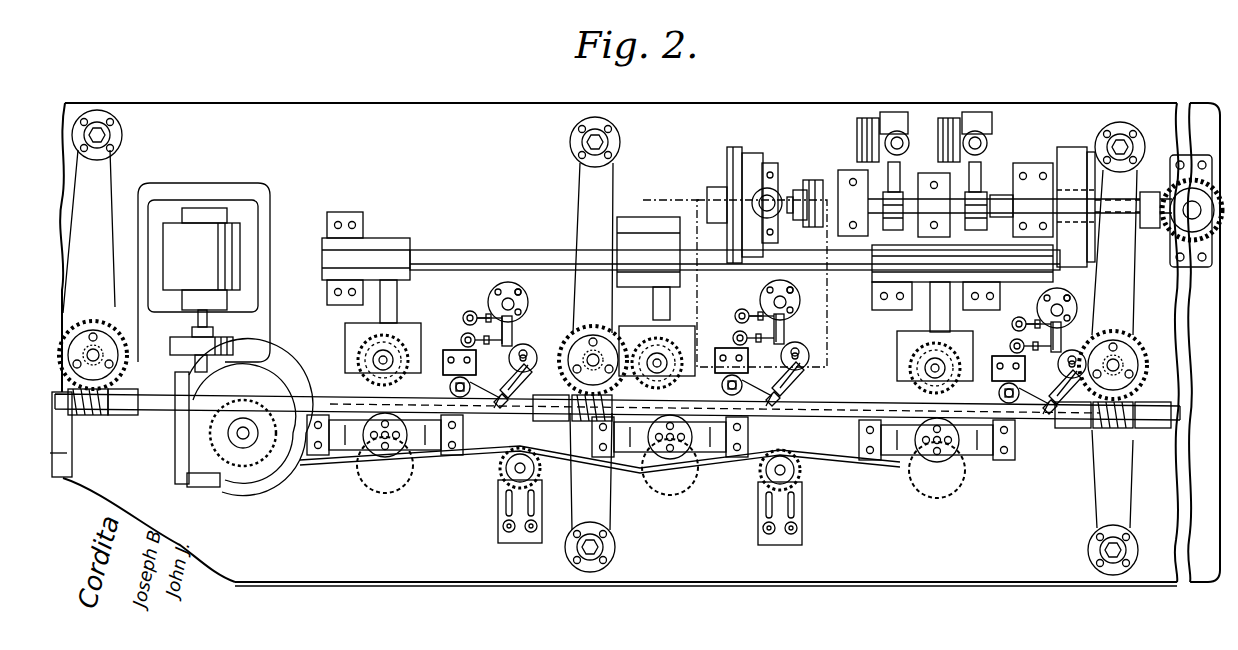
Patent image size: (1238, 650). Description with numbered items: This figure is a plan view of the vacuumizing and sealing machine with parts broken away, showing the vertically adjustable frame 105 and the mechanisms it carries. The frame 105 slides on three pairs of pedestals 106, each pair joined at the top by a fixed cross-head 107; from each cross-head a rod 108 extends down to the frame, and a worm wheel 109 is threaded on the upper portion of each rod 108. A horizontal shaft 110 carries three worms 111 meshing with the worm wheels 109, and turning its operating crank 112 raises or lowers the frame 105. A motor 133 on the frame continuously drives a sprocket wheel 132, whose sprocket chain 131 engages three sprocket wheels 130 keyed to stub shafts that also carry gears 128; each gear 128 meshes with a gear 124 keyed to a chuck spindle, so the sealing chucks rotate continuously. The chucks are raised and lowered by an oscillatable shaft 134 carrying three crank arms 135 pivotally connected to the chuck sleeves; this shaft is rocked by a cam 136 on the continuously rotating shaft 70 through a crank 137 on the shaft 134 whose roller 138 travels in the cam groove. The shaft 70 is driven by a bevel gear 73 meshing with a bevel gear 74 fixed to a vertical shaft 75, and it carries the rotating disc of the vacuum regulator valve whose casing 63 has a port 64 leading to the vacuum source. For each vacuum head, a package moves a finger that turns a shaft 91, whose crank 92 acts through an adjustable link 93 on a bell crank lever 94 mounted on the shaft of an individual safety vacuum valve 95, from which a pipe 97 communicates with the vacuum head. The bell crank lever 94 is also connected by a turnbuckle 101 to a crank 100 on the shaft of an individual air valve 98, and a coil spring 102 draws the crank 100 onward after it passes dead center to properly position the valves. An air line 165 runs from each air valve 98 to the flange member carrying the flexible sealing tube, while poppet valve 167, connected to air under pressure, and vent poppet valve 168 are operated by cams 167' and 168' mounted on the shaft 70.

The casing of vacuum regulator valve 63 is at (748, 158).
The port 64 is at (770, 200).
The shaft 70 is at (812, 182).
The bevel gear 73 is at (1192, 183).
The bevel gear 74 is at (1195, 205).
The vertical shaft 75 is at (1205, 268).
The shaft 91 is at (458, 387).
The crank 92 is at (470, 398).
The adjustable link 93 is at (500, 405).
The bell crank lever 94 is at (525, 372).
The individual safety vacuum valve 95 is at (530, 352).
The pipe 97 is at (462, 342).
The individual air valve 98 is at (500, 282).
The crank 100 is at (505, 310).
The turnbuckle 101 is at (463, 322).
The coil spring 102 is at (522, 292).
The frame 105 is at (413, 135).
The pedestals 106 is at (108, 137).
The cross-heads 107 is at (95, 487).
The rod 108 is at (100, 357).
The worm wheel 109 is at (97, 322).
The horizontal shaft 110 is at (155, 412).
The worms 111 is at (1141, 460).
The operating crank 112 is at (95, 467).
The gear 124 is at (350, 345).
The gear 128 is at (405, 478).
The sprocket wheels 130 is at (368, 480).
The sprocket chain 131 is at (322, 470).
The sprocket wheel 132 is at (225, 507).
The motor 133 is at (222, 240).
The oscillatable shaft 134 is at (528, 244).
The crank arms 135 is at (395, 298).
The cam 136 is at (1075, 150).
The crank 137 is at (1040, 268).
The roller 138 is at (1095, 235).
The air line 165 is at (470, 312).
The poppet valve 167 is at (973, 163).
The cam 167' is at (1001, 176).
The poppet valve 168 is at (889, 121).
The cam 168' is at (927, 154).